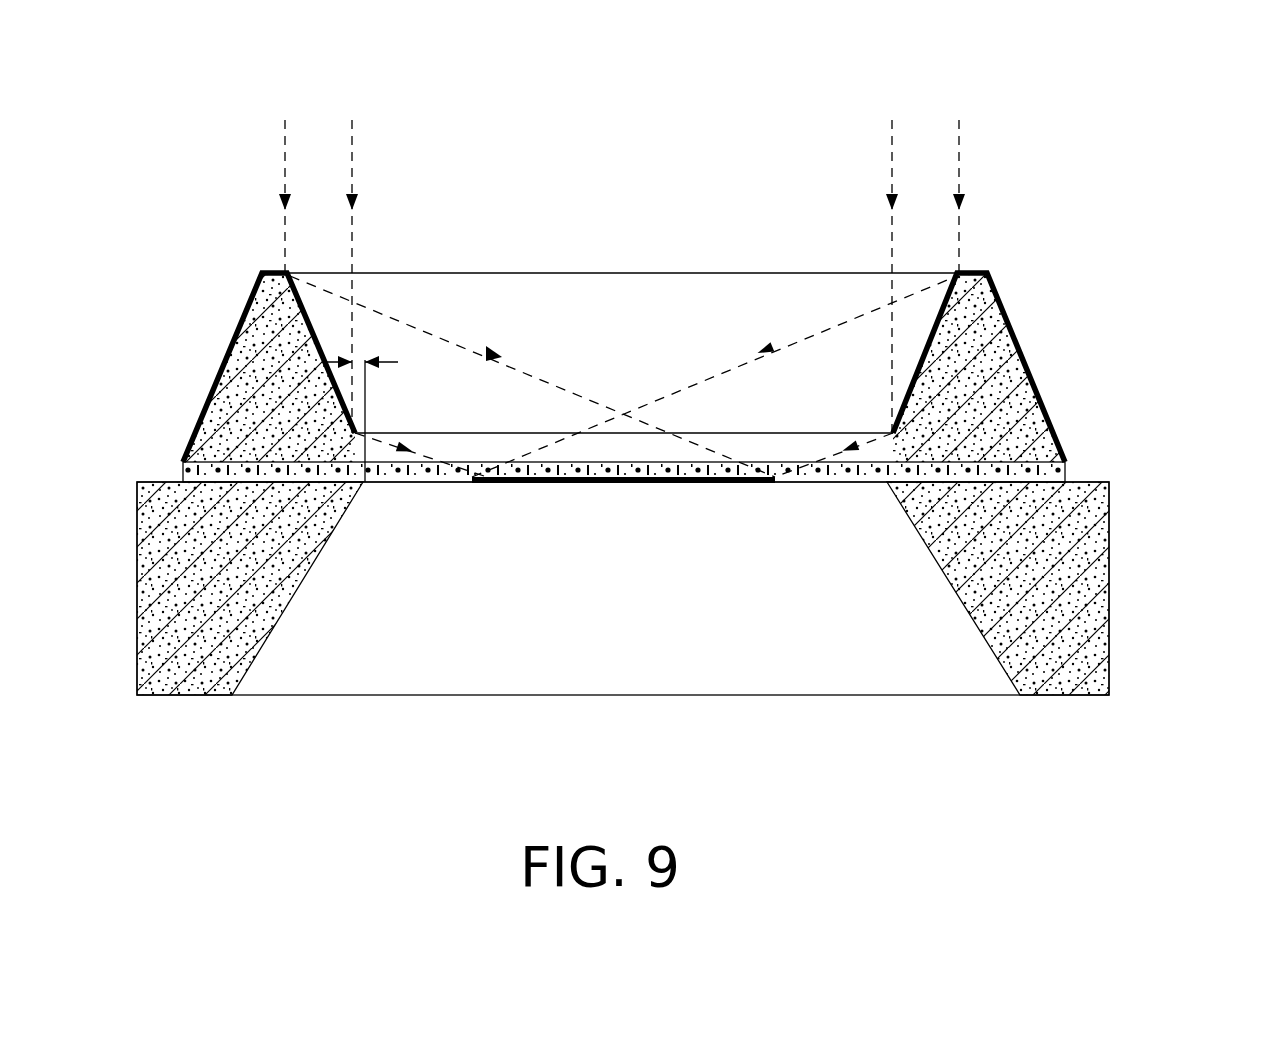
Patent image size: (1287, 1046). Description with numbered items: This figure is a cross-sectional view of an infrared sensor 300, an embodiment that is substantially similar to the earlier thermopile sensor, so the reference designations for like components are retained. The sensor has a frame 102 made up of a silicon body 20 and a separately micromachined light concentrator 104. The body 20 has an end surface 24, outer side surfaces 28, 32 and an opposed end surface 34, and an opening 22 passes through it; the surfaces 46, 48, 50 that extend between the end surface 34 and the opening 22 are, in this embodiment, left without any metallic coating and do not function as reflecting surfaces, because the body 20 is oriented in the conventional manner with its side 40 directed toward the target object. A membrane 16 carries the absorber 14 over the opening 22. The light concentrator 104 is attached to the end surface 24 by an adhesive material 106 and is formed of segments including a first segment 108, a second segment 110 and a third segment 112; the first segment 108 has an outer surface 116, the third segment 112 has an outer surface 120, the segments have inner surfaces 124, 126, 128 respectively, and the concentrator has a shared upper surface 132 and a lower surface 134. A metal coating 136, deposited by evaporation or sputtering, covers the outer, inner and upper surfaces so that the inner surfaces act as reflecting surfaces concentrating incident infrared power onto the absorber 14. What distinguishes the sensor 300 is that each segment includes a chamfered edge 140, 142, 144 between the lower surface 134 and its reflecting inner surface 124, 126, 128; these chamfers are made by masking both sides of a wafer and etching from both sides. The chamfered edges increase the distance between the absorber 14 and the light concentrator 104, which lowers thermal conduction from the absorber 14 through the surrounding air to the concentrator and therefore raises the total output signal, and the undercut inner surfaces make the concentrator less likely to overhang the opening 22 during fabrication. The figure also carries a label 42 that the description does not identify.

The infrared sensor 300 is at (1175, 128).
The body 20 is at (1122, 560).
The outer side surface 32 is at (137, 548).
The outer side surface 28 is at (1110, 628).
The end surface 24 is at (1088, 468).
The absorber 14 is at (632, 497).
The membrane 16 is at (811, 497).
The outer surface 120 is at (250, 300).
The third segment 112 is at (232, 398).
The inner surface 128 is at (310, 308).
The shared upper surface 132 is at (276, 272).
The lower surface 134 is at (178, 478).
The light concentrator 104 is at (1033, 330).
The outer surface 116 is at (999, 300).
The first segment 108 is at (1030, 395).
The inner surface 124 is at (942, 300).
The metal coating 136 is at (931, 337).
The adhesive material 106 is at (1068, 459).
The frame 102 is at (1165, 398).
The second segment 110 is at (652, 310).
The inner surface 126 is at (540, 292).
The side 40 is at (607, 172).
The chamfered edge 144 is at (387, 477).
The opening 22 is at (365, 483).
The chamfered edge 142 is at (590, 481).
The chamfered edge 140 is at (890, 482).
The opposed end surface 34 is at (163, 697).
The reflecting surface 50 is at (253, 663).
The reflecting surface 46 is at (985, 648).
The reflecting surface 48 is at (617, 680).
The direction of transmitted light 42 is at (552, 732).